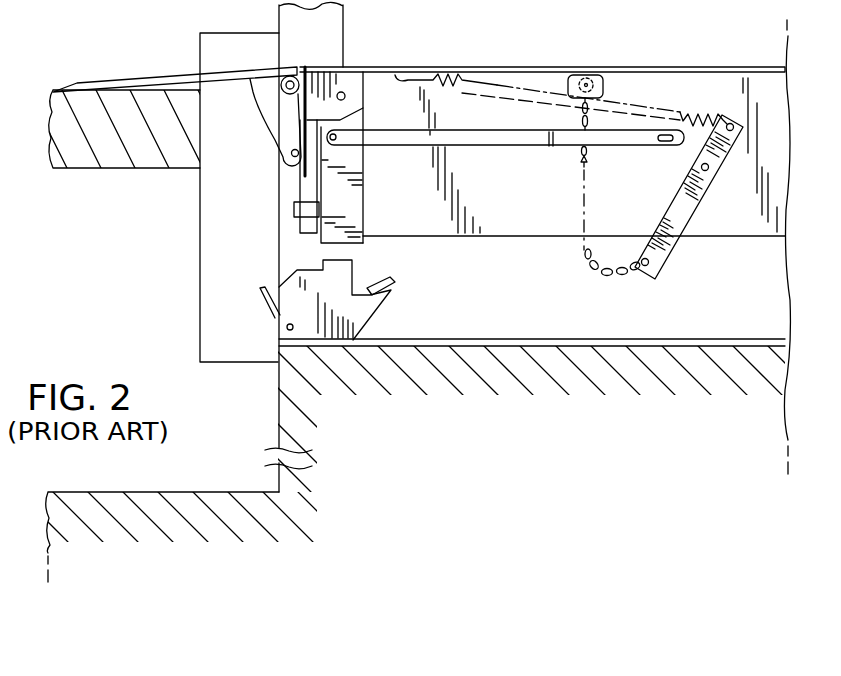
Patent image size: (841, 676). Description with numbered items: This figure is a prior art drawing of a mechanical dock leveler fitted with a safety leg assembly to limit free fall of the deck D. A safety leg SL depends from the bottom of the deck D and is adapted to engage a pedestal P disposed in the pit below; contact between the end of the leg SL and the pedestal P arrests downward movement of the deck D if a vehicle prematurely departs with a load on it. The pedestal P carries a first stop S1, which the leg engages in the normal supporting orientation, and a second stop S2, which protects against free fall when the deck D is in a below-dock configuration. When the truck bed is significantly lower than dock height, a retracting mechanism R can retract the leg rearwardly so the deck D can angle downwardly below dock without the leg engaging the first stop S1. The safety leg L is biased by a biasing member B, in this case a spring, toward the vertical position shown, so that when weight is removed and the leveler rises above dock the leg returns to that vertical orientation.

The safety leg L is at (178, 75).
The deck D is at (555, 70).
The biasing member B is at (443, 83).
The retracting mechanism R is at (555, 147).
The safety leg SL is at (343, 193).
The first stop S1 is at (330, 253).
The second stop S2 is at (380, 283).
The pedestal P is at (343, 310).